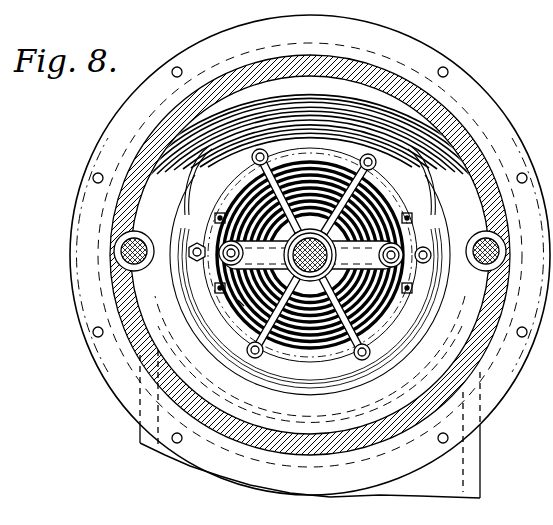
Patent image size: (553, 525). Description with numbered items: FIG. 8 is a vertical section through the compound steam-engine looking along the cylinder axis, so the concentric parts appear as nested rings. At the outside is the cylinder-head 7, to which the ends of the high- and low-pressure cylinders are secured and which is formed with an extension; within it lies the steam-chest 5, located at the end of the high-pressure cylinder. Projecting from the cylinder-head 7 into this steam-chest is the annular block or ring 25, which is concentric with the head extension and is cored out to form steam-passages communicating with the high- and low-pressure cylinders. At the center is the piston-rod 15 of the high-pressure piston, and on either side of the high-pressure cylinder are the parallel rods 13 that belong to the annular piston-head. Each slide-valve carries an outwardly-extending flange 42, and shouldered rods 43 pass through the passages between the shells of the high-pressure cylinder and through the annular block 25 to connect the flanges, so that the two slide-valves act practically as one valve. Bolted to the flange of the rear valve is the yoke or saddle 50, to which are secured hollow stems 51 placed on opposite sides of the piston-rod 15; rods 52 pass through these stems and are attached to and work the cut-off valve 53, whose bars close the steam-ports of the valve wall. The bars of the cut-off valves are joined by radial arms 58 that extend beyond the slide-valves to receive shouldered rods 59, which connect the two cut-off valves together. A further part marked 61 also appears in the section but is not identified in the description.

The cylinder-head 7 is at (310, 256).
The steam-chest 5 is at (306, 82).
The parallel rod 13 is at (126, 256).
The shouldered rod 43 is at (375, 160).
The annular block 25 is at (392, 171).
The piston-rod 15 is at (310, 255).
The yoke or saddle 50 is at (313, 256).
The radial arm 58 is at (264, 178).
The shouldered rod 59 is at (256, 157).
The flange 42 is at (194, 251).
The hollow stem 51 is at (232, 268).
The rod 52 is at (425, 253).
The cut-off valve 53 is at (238, 302).
The collar 61 is at (315, 255).